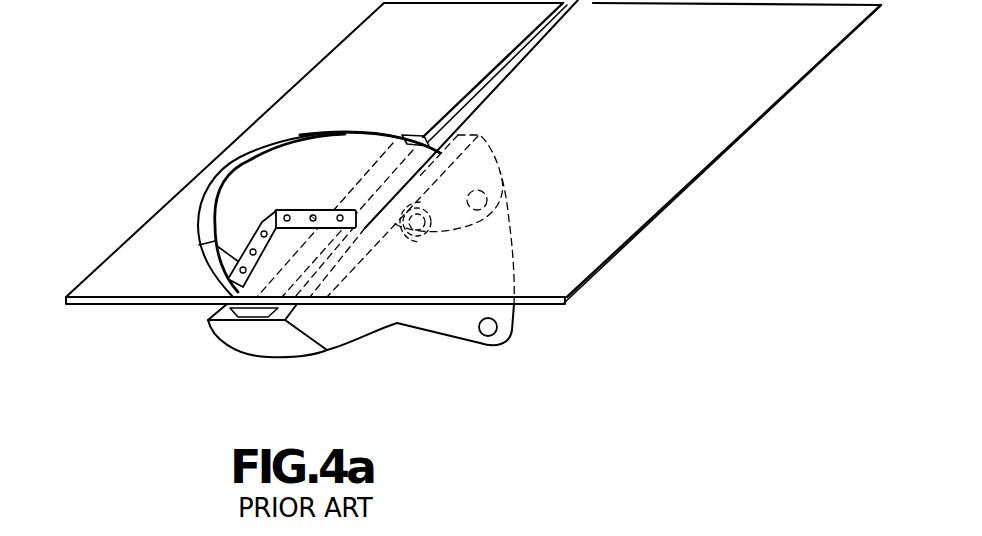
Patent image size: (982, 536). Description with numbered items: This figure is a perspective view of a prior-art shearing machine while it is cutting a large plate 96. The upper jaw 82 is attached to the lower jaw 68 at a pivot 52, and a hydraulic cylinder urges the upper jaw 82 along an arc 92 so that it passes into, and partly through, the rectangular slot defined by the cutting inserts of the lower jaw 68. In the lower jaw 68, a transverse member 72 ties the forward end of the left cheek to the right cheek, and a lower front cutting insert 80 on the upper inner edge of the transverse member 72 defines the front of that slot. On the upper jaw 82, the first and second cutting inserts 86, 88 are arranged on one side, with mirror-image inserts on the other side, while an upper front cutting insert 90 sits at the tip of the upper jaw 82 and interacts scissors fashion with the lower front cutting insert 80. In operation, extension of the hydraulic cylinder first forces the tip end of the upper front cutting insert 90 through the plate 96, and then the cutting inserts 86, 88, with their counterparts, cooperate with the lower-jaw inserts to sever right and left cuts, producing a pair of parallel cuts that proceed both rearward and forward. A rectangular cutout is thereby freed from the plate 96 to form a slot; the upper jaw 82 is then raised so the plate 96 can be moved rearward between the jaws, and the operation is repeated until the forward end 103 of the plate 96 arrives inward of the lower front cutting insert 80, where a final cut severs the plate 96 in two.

The pivot 52 is at (421, 236).
The lower jaw 68 is at (415, 334).
The transverse member 72 is at (275, 344).
The lower front cutting insert 80 is at (236, 321).
The upper jaw 82 is at (337, 134).
The first cutting insert 86 is at (256, 229).
The second cutting insert 88 is at (301, 209).
The upper front cutting insert 90 is at (205, 259).
The arc 92 is at (246, 113).
The plate 96 is at (783, 88).
The forward end of plate 103 is at (110, 304).